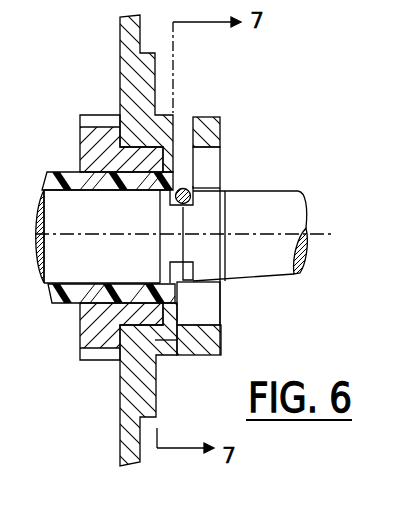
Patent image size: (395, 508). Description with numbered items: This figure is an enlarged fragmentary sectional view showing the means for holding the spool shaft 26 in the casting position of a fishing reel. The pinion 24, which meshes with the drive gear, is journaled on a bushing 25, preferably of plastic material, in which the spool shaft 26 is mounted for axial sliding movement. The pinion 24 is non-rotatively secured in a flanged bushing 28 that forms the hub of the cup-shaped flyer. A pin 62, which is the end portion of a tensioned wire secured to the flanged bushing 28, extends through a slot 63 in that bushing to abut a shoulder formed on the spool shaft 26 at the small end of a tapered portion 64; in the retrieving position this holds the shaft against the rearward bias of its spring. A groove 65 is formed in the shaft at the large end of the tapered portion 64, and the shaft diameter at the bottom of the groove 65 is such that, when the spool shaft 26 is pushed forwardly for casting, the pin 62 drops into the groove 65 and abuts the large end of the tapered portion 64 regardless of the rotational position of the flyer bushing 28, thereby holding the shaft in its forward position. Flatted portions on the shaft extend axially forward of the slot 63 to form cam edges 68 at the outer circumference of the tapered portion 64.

The pinion 24 is at (97, 117).
The bushing 25 is at (60, 170).
The spool shaft 26 is at (109, 268).
The flanged bushing 28 is at (203, 352).
The pin 62 is at (187, 189).
The slot 63 is at (190, 128).
The tapered portion 64 is at (277, 205).
The groove 65 is at (170, 264).
The cam edges 68 is at (192, 276).